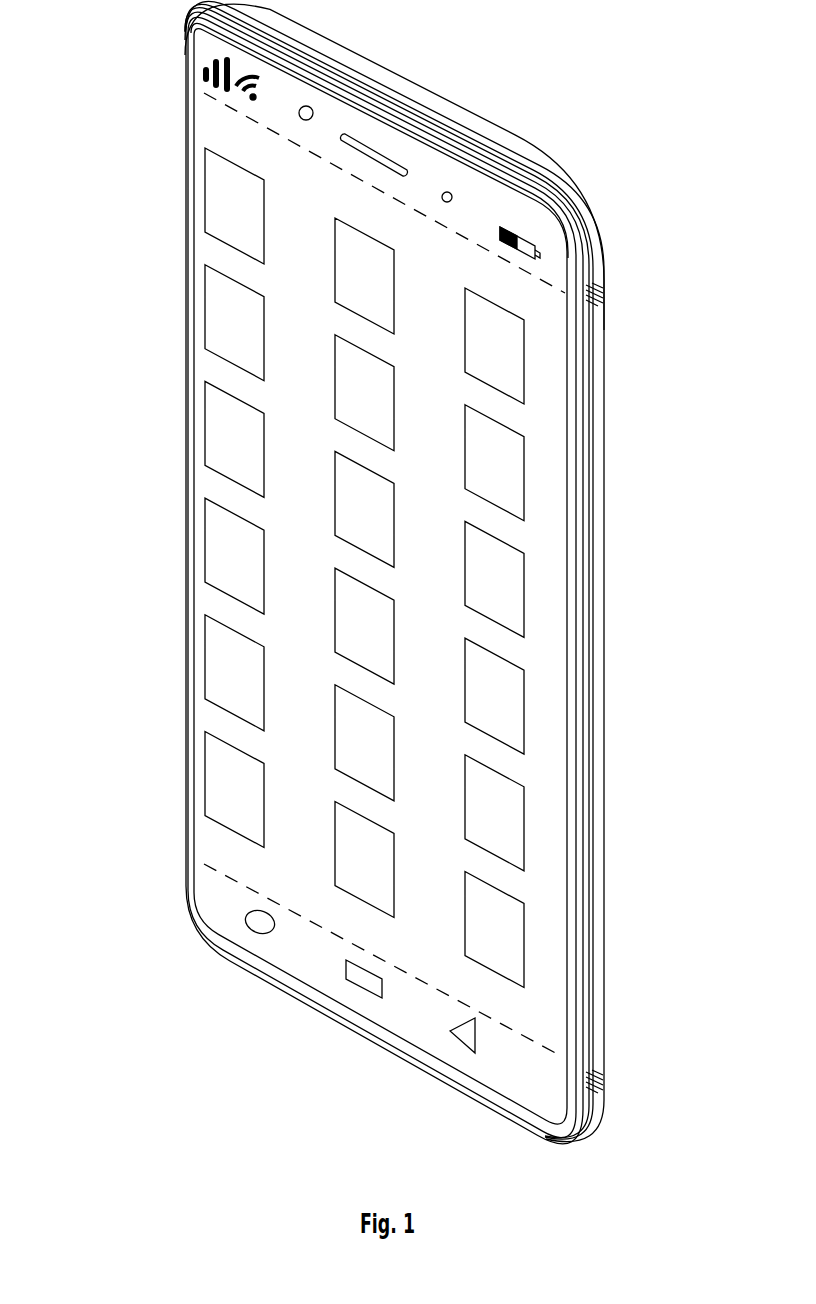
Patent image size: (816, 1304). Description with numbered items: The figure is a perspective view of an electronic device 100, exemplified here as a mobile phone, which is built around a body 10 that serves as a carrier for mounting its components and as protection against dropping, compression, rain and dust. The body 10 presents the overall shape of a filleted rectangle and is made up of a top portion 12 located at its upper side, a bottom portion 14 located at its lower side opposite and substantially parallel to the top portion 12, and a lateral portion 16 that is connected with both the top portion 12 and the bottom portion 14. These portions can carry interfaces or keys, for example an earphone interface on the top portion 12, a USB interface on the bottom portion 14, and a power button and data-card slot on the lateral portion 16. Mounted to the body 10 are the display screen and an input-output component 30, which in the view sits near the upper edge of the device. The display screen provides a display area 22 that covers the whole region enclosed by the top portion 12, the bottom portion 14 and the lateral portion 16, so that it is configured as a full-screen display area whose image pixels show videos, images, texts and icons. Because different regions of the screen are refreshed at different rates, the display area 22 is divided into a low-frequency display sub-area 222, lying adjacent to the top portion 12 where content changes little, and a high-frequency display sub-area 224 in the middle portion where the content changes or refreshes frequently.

The electronic device 100 is at (392, 593).
The body 10 is at (604, 785).
The top portion 12 is at (457, 134).
The bottom portion 14 is at (538, 1138).
The lateral portion 16 is at (596, 702).
The display area 22 is at (379, 576).
The low-frequency display sub-area 222 is at (198, 50).
The high-frequency display sub-area 224 is at (203, 478).
The input-output component 30 is at (444, 192).